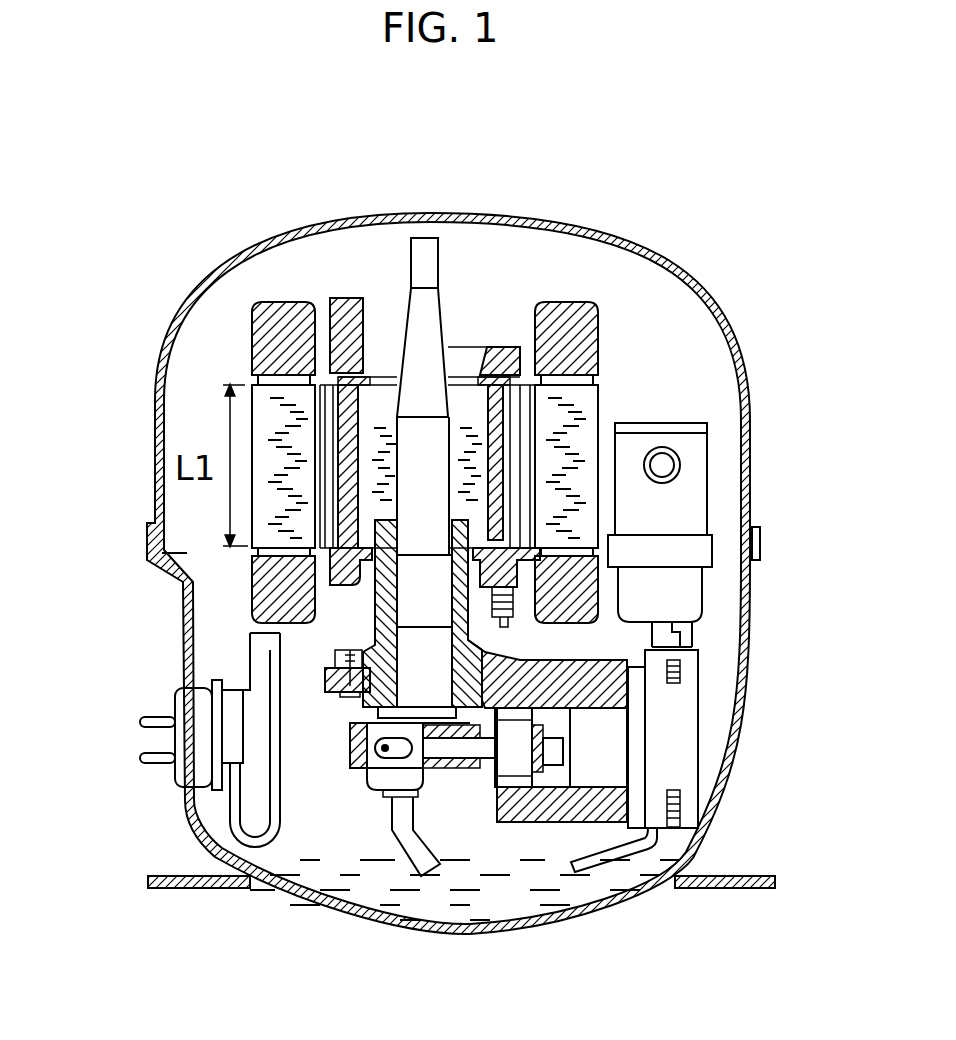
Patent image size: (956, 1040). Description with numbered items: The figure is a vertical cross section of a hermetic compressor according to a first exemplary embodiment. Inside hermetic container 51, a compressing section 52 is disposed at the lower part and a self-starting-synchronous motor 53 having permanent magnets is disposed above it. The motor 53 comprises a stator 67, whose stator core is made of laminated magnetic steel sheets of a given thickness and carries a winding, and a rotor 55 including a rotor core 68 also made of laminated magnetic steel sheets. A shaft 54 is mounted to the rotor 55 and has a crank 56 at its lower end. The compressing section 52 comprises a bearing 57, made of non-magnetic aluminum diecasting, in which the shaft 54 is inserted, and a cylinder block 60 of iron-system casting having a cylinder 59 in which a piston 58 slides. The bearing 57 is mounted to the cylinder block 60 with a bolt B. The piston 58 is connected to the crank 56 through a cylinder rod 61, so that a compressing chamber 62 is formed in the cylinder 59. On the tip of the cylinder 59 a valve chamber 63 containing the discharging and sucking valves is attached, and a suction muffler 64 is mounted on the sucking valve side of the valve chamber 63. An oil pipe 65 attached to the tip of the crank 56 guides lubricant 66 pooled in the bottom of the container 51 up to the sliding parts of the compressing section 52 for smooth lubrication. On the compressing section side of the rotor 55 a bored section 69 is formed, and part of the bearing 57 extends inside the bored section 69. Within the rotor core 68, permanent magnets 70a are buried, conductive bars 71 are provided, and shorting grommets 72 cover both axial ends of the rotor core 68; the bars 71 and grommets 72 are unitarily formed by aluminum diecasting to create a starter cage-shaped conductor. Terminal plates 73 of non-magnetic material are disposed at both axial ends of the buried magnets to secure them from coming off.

The hermetic container 51 is at (237, 250).
The compressing section 52 is at (722, 662).
The self-starting-synchronous motor 53 is at (193, 438).
The shaft 54 is at (418, 665).
The rotor 55 is at (323, 360).
The crank 56 is at (385, 750).
The bearing 57 is at (383, 623).
The piston 58 is at (555, 775).
The cylinder 59 is at (590, 683).
The cylinder block 60 is at (553, 673).
The cylinder rod 61 is at (458, 762).
The compressing chamber 62 is at (613, 750).
The valve chamber 63 is at (665, 775).
The suction muffler 64 is at (682, 510).
The oil pipe 65 is at (410, 845).
The lubricant 66 is at (627, 878).
The stator 67 is at (300, 430).
The rotor core 68 is at (375, 408).
The bored section 69 is at (373, 530).
The permanent magnets 70a is at (508, 447).
The conductive bars 71 is at (497, 453).
The shorting grommets 72 is at (502, 355).
The terminal plates 73 is at (357, 393).
The bolt B is at (340, 687).